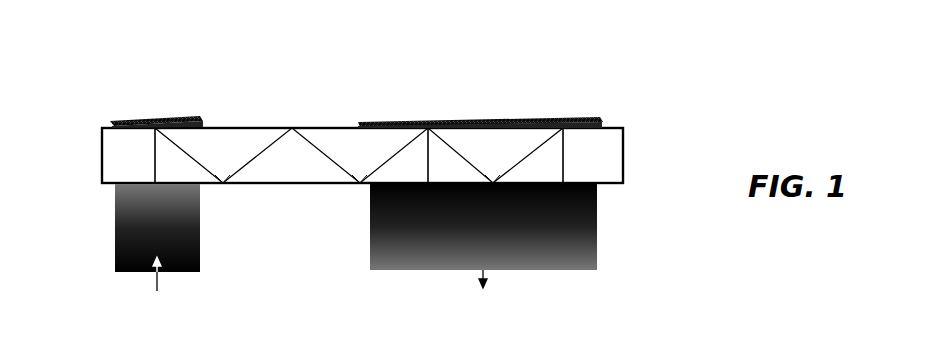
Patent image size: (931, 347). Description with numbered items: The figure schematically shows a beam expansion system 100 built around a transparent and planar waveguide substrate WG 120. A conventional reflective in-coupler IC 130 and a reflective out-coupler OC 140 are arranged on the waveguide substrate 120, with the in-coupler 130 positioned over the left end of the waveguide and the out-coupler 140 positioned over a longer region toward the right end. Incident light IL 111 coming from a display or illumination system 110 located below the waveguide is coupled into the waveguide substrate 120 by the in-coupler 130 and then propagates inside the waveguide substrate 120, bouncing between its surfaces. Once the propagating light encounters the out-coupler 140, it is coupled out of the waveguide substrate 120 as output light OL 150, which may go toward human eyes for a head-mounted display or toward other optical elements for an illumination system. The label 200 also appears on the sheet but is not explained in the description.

The beam expansion system 100 is at (661, 51).
The display or illumination system 110 is at (142, 299).
The incident light 111 is at (110, 214).
The waveguide substrate 120 is at (113, 170).
The reflective in-coupler 130 is at (114, 119).
The reflective out-coupler 140 is at (598, 123).
The output light 150 is at (592, 259).
The sheet reference 200 is at (723, 340).